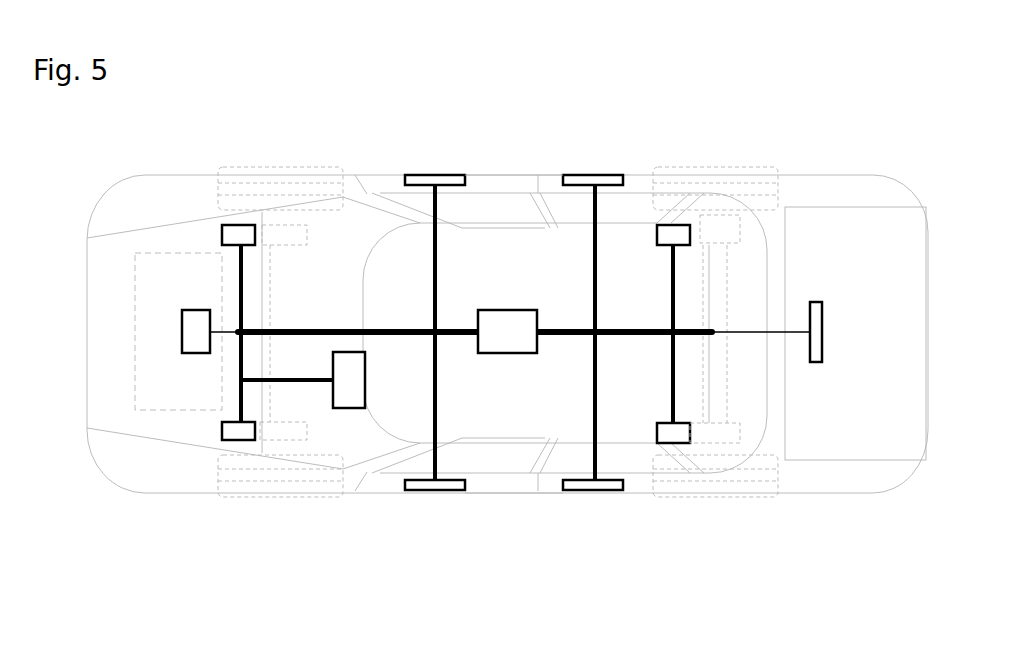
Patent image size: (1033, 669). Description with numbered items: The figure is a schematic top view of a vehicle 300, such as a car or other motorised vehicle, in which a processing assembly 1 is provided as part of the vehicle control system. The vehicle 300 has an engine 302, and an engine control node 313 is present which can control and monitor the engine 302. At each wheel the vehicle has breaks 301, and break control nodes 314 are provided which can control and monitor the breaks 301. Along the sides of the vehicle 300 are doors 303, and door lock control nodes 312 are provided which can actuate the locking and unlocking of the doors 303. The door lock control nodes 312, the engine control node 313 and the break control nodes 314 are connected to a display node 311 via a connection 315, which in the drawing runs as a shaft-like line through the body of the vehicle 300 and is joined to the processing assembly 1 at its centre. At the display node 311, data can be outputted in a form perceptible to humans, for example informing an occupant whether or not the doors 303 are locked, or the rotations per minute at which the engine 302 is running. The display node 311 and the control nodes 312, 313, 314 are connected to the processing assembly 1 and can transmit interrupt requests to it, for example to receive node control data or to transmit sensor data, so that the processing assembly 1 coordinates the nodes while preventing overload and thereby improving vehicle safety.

The processing assembly 1 is at (514, 344).
The vehicle 300 is at (143, 460).
The breaks 301 is at (280, 232).
The engine 302 is at (196, 281).
The doors 303 is at (505, 182).
The display node 311 is at (350, 377).
The door lock control nodes 312 is at (435, 180).
The engine control node 313 is at (197, 333).
The break control nodes 314 is at (243, 237).
The connection 315 is at (618, 333).